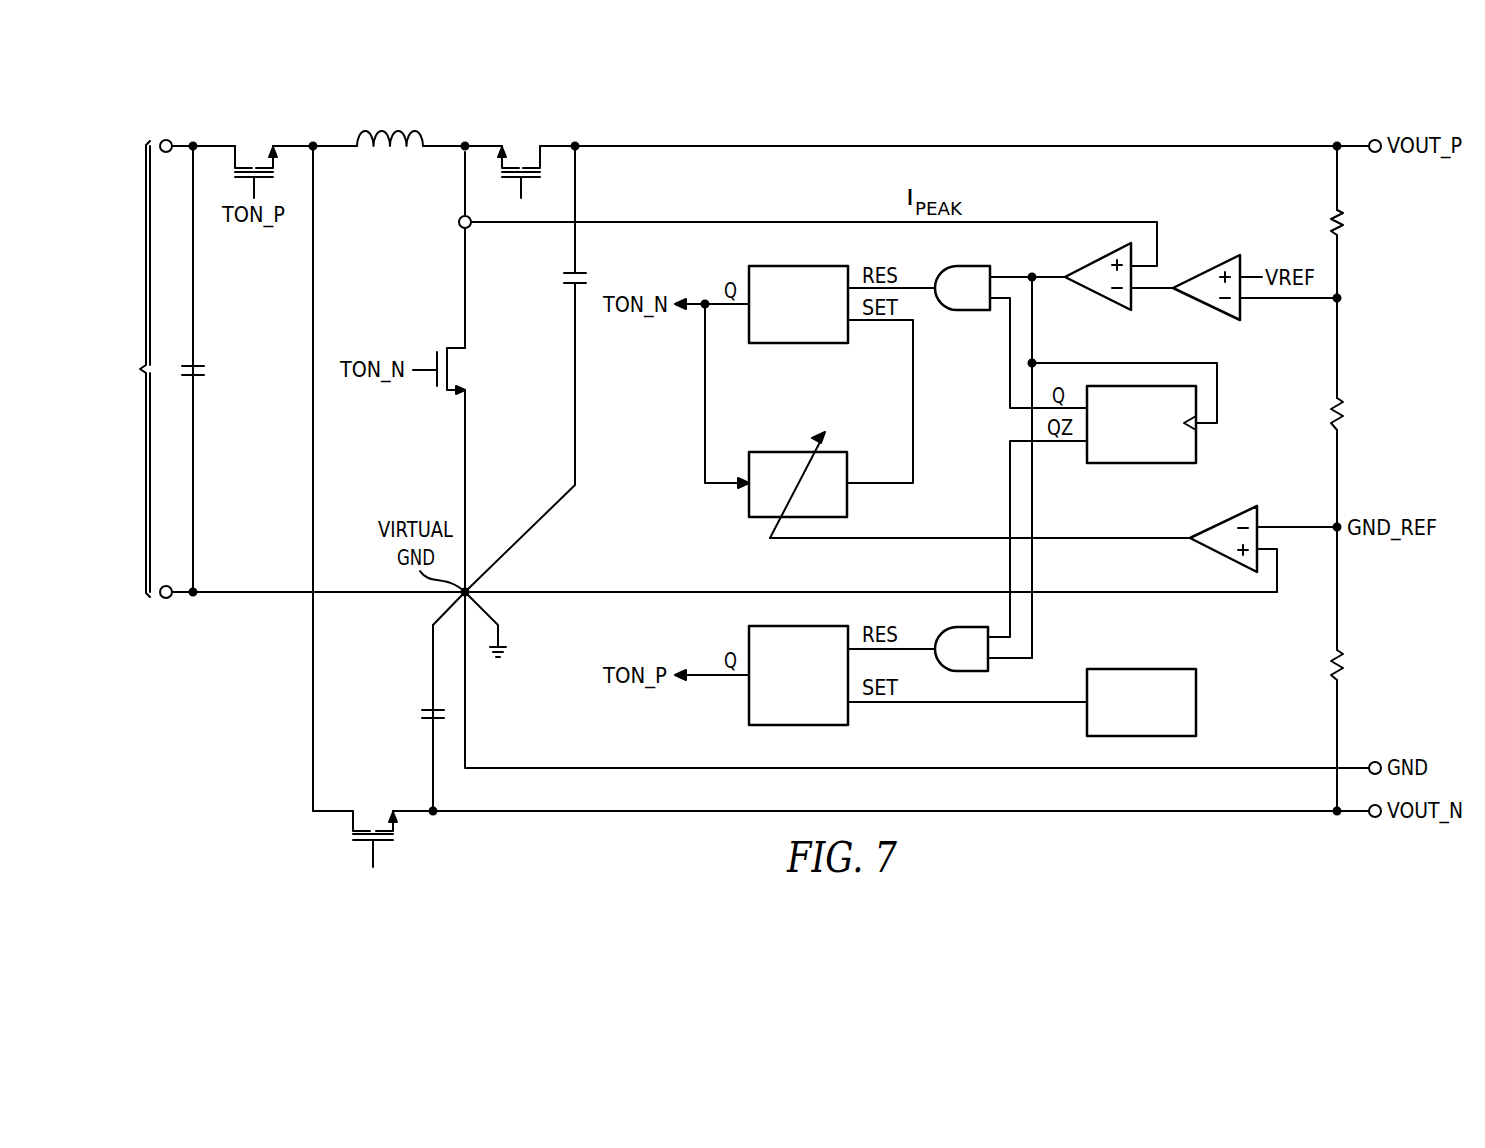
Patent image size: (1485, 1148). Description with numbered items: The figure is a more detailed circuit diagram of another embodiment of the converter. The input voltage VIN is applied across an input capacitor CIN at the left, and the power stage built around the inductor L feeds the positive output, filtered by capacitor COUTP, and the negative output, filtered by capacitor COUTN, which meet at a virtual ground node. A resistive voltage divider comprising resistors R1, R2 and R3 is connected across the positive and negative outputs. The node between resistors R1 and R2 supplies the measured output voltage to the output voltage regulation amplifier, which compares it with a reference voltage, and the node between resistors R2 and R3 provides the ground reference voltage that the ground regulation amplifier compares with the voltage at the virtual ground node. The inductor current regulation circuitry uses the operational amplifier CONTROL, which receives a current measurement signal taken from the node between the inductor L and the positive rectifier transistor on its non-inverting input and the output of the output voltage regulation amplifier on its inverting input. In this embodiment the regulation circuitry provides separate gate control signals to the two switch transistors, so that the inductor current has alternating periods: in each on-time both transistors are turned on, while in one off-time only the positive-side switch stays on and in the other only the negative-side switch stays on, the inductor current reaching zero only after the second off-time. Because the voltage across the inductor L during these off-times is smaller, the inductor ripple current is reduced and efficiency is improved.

The input voltage VIN is at (126, 369).
The input capacitor CIN is at (216, 369).
The inductor L is at (390, 123).
The positive output capacitor COUTP is at (540, 277).
The negative output capacitor COUTN is at (398, 718).
The operational amplifier CONTROL is at (1098, 290).
The resistor R1 is at (1351, 222).
The resistor R2 is at (1351, 414).
The resistor R3 is at (1351, 665).